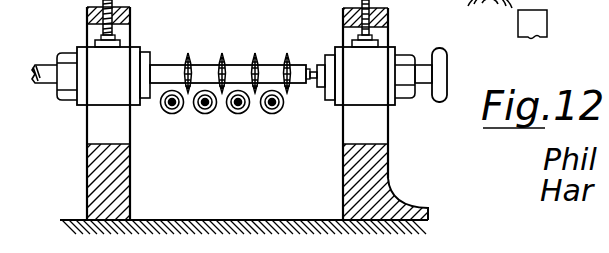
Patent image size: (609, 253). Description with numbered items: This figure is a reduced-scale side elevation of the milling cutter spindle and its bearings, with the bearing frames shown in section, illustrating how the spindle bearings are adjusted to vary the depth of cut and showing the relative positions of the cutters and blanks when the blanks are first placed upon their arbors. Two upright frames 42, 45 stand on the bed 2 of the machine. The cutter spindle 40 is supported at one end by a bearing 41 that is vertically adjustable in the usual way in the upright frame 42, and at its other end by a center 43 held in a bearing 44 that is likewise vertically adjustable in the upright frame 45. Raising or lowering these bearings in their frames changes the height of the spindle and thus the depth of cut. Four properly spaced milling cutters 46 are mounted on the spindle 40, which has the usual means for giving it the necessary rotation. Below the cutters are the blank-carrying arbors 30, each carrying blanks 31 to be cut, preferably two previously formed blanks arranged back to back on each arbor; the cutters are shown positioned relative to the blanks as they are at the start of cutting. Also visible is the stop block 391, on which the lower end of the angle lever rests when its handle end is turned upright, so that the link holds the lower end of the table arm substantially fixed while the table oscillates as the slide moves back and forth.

The bed 2 is at (259, 220).
The blank-carrying arbor 30 is at (238, 108).
The blank 31 is at (181, 113).
The cutter spindle 40 is at (167, 65).
The bearing 41 is at (146, 60).
The upright frame 42 is at (80, 129).
The center 43 is at (315, 82).
The bearing 44 is at (327, 108).
The upright frame 45 is at (389, 128).
The milling cutter 46 is at (223, 55).
The stop block 391 is at (548, 22).